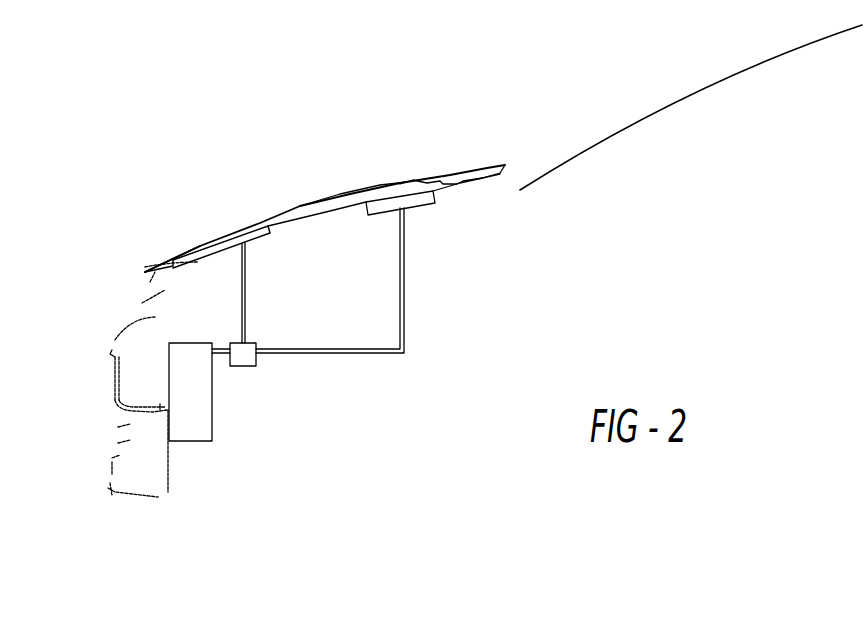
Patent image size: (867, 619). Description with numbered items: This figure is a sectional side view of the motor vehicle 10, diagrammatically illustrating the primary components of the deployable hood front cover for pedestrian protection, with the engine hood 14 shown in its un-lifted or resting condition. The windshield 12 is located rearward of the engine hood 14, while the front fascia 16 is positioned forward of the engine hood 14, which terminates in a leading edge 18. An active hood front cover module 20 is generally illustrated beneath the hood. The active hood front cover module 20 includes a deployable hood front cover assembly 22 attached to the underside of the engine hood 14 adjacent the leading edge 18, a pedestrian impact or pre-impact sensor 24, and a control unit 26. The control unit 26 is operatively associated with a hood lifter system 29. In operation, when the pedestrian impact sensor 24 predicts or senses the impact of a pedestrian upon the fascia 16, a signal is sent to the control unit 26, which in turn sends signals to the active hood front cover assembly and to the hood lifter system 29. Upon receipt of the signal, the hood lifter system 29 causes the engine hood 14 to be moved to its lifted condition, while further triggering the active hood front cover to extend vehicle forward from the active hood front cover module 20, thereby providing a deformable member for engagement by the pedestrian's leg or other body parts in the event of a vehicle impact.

The motor vehicle 10 is at (217, 177).
The windshield 12 is at (647, 118).
The engine hood 14 is at (300, 205).
The front fascia 16 is at (118, 385).
The leading edge 18 is at (155, 265).
The active hood front cover module 20 is at (440, 328).
The deployable hood front cover assembly 22 is at (265, 240).
The pedestrian impact or pre-impact sensor 24 is at (197, 407).
The control unit 26 is at (248, 355).
The hood lifter system 29 is at (435, 202).